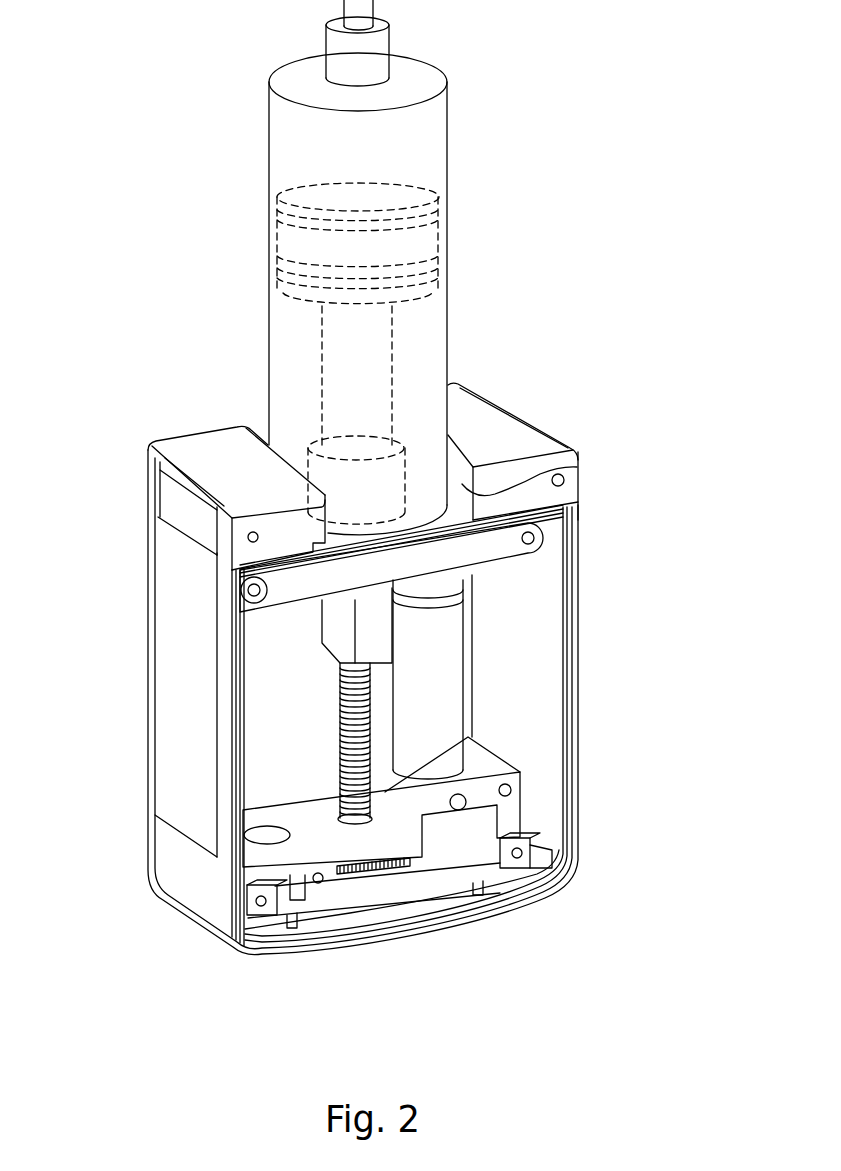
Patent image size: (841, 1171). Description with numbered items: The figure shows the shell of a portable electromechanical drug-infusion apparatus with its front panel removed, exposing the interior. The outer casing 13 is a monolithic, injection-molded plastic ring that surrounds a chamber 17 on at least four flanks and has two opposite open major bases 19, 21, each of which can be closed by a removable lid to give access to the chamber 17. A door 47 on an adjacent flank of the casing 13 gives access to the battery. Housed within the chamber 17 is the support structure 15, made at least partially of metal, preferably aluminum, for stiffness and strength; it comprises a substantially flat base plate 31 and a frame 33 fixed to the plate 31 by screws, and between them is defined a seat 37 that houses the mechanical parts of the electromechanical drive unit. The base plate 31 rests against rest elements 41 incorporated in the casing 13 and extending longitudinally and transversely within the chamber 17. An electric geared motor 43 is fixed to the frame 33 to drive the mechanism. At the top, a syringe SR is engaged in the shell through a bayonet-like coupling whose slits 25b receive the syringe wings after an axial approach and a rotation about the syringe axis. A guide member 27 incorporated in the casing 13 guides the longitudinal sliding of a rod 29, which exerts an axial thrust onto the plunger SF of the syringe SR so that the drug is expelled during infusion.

The syringe SR is at (447, 143).
The plunger SF is at (373, 200).
The guide member 27 is at (363, 487).
The outer casing 13 is at (583, 673).
The open major base 21 is at (150, 768).
The door 47 is at (180, 692).
The slit 25b is at (562, 468).
The open major base 19 is at (563, 586).
The chamber 17 is at (535, 737).
The longitudinally slidable rod 29 is at (343, 622).
The electric geared motor 43 is at (443, 669).
The frame 33 is at (512, 805).
The seat 37 is at (380, 875).
The rest elements 41 is at (473, 884).
The base plate 31 is at (538, 864).
The support structure 15 is at (330, 915).